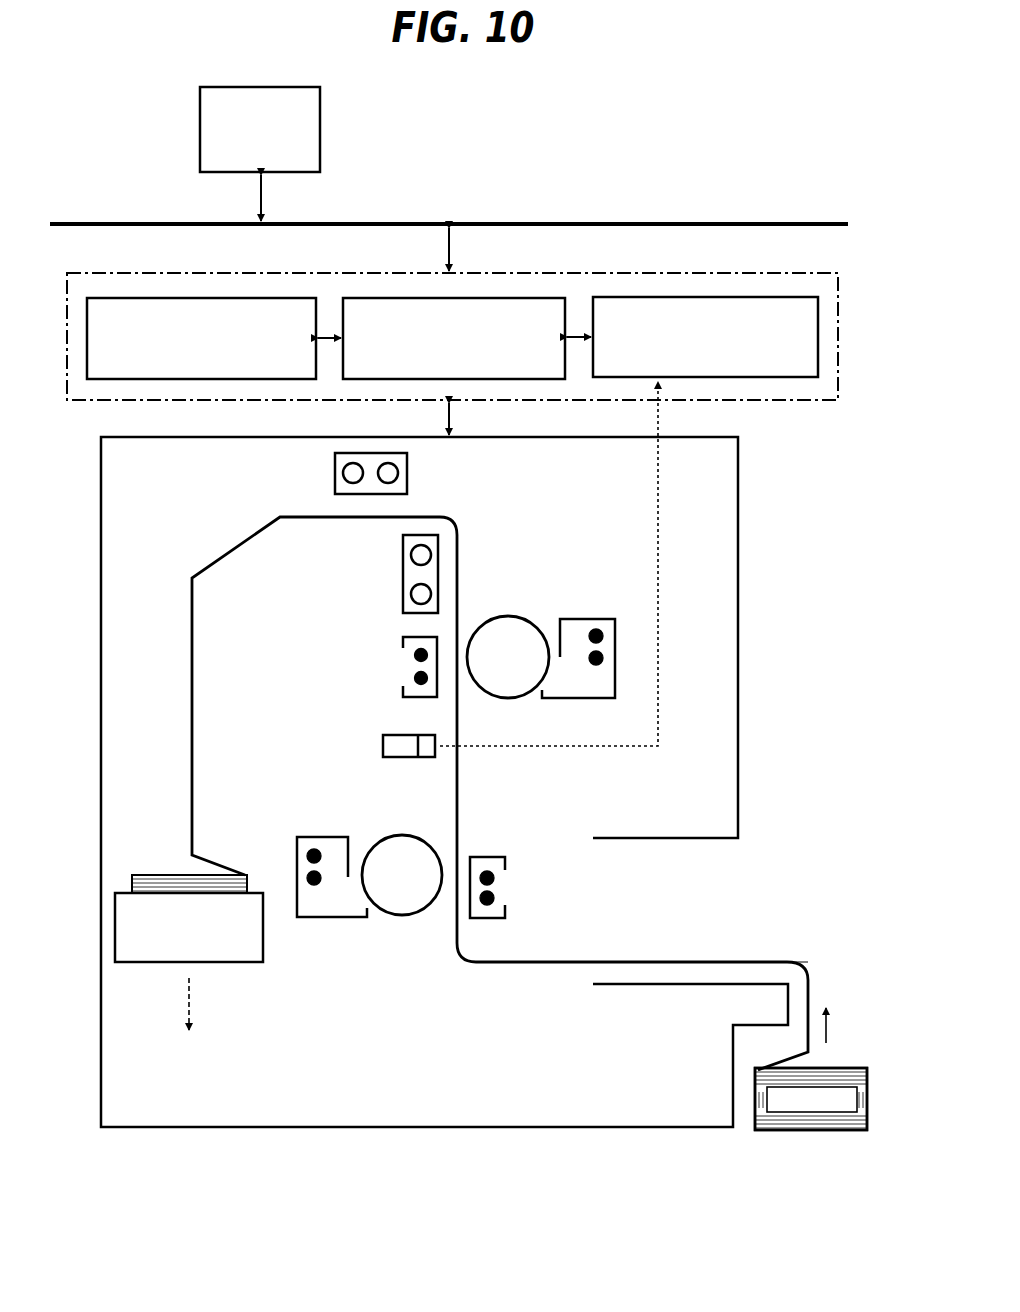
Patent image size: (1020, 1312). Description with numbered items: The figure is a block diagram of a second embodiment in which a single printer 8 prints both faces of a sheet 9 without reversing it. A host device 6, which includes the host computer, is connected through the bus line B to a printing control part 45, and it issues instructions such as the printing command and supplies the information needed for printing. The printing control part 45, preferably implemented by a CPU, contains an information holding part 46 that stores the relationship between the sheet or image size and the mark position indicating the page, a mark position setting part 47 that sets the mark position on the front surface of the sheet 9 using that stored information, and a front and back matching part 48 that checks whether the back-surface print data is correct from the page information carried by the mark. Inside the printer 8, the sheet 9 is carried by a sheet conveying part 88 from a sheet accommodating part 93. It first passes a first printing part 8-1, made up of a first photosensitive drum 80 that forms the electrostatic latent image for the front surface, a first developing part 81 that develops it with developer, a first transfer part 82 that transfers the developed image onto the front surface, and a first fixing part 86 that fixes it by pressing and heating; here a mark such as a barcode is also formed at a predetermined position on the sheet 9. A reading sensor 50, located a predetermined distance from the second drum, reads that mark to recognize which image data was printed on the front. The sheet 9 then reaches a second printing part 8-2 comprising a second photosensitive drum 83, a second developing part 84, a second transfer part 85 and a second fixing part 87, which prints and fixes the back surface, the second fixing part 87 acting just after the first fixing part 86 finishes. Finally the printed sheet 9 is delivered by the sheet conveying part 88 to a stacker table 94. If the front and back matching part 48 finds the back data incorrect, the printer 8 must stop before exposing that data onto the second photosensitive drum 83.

The host device 6 is at (200, 124).
The bus line B is at (733, 222).
The printing control part 45 is at (752, 273).
The information holding part 46 is at (87, 327).
The mark position setting part 47 is at (384, 298).
The front and back matching part 48 is at (652, 297).
The printer 8 is at (101, 472).
The first printing part 8-1 is at (497, 840).
The second printing part 8-2 is at (622, 677).
The second fixing part 87 is at (335, 478).
The first fixing part 86 is at (403, 585).
The second transfer part 85 is at (403, 637).
The second photosensitive drum 83 is at (520, 617).
The second developing part 84 is at (615, 640).
The reading sensor 50 is at (383, 745).
The stacker table 94 is at (233, 962).
The sheet 9 is at (150, 880).
The sheet accommodating part 93 is at (867, 1095).
The first developing part 81 is at (331, 917).
The first photosensitive drum 80 is at (398, 915).
The first transfer part 82 is at (503, 855).
The sheet conveying part 88 is at (752, 960).